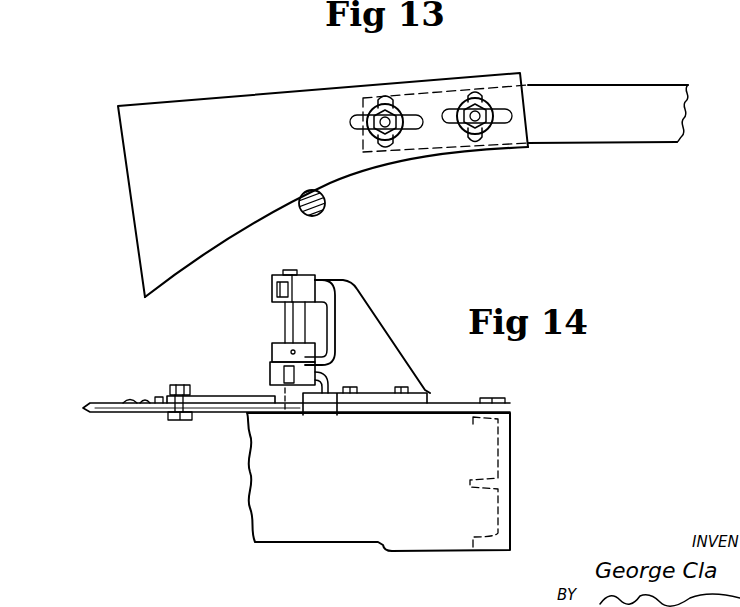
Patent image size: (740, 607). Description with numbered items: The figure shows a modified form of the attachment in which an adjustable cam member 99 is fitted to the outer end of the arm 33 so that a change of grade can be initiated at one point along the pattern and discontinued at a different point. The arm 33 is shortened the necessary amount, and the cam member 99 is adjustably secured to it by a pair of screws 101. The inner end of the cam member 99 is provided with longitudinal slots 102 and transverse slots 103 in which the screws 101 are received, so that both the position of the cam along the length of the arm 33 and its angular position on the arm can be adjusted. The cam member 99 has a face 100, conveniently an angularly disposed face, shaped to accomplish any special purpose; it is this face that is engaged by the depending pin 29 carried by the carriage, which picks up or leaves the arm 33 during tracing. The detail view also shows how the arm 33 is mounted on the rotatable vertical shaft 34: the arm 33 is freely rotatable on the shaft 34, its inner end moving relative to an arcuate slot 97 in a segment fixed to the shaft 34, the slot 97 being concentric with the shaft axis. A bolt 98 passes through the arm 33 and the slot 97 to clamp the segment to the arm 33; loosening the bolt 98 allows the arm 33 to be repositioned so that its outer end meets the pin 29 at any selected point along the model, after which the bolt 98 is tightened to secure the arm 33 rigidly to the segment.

In FIG. 13, the depending pin 29 is at (326, 204).
In FIG. 13, the arm 33 is at (657, 93).
In FIG. 14, the arm 33 is at (135, 407).
In FIG. 14, the rotatable vertical shaft 34 is at (293, 273).
In FIG. 14, the arcuate slot 97 is at (273, 392).
In FIG. 14, the bolt 98 is at (180, 381).
In FIG. 13, the adjustable cam member 99 is at (248, 107).
In FIG. 13, the cam face 100 is at (249, 218).
In FIG. 13, the screws 101 is at (473, 112).
In FIG. 13, the longitudinal slots 102 is at (455, 123).
In FIG. 13, the transverse slots 103 is at (383, 95).